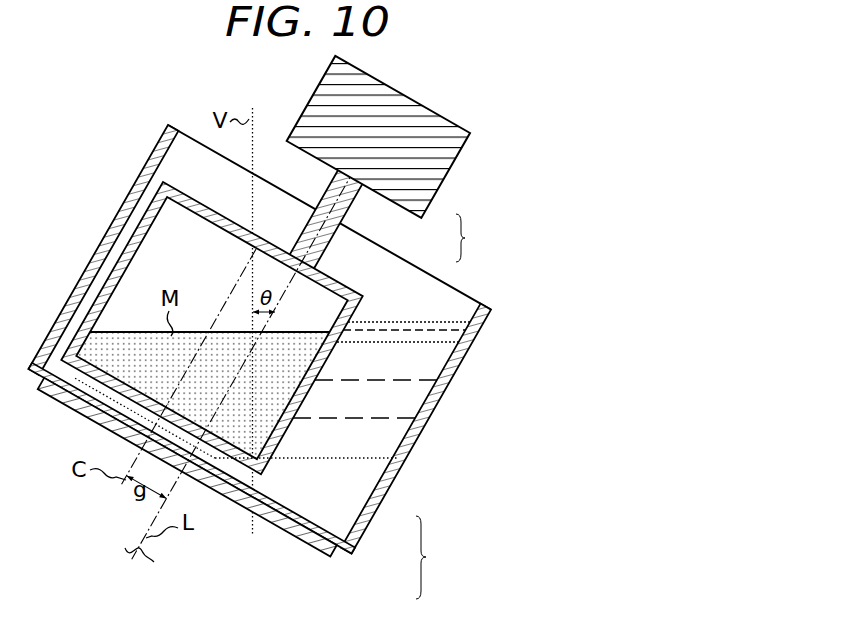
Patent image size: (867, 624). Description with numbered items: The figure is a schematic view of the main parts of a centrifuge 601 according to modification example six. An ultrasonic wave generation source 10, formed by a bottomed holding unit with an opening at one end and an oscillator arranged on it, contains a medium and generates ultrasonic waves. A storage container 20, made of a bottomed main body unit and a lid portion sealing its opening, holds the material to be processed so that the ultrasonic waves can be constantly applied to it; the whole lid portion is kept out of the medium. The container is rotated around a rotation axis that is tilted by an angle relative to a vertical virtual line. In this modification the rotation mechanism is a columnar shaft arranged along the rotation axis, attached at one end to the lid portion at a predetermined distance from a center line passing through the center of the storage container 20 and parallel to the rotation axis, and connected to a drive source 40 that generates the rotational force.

The ultrasonic wave generation source 10 is at (435, 557).
The storage container 20 is at (476, 238).
The drive source 40 is at (469, 132).
The centrifuge 601 is at (491, 303).